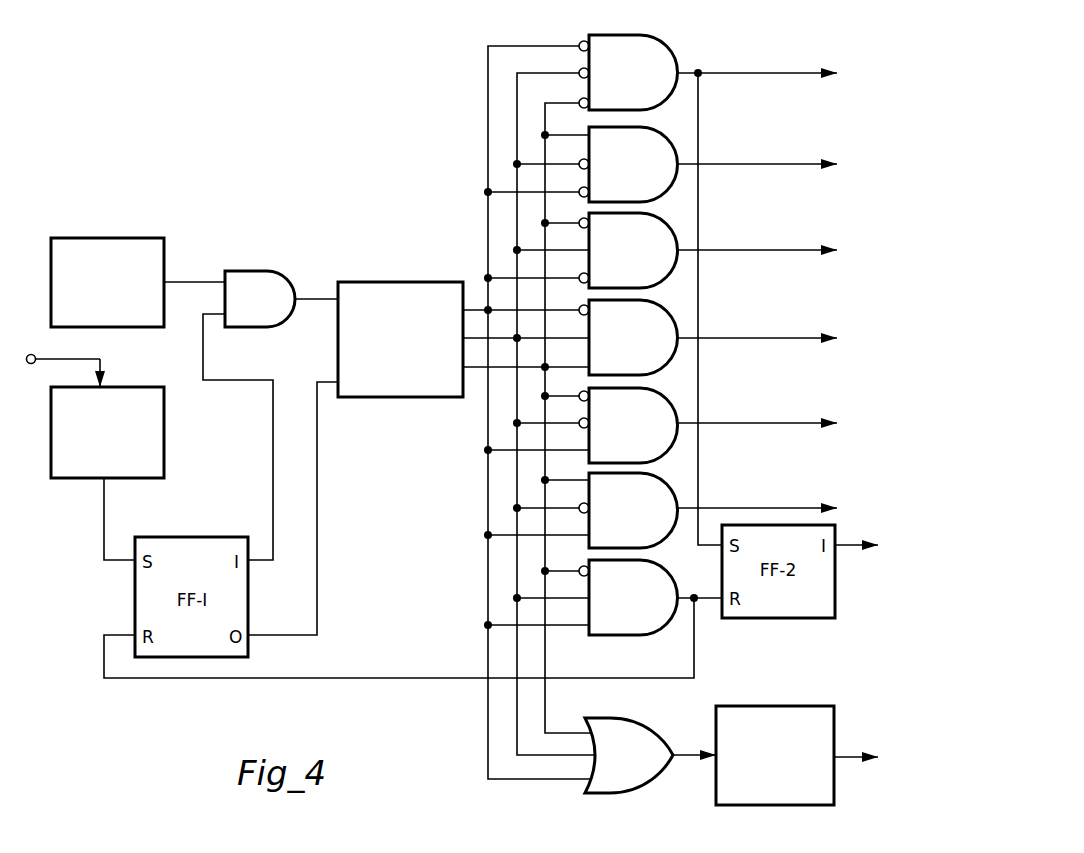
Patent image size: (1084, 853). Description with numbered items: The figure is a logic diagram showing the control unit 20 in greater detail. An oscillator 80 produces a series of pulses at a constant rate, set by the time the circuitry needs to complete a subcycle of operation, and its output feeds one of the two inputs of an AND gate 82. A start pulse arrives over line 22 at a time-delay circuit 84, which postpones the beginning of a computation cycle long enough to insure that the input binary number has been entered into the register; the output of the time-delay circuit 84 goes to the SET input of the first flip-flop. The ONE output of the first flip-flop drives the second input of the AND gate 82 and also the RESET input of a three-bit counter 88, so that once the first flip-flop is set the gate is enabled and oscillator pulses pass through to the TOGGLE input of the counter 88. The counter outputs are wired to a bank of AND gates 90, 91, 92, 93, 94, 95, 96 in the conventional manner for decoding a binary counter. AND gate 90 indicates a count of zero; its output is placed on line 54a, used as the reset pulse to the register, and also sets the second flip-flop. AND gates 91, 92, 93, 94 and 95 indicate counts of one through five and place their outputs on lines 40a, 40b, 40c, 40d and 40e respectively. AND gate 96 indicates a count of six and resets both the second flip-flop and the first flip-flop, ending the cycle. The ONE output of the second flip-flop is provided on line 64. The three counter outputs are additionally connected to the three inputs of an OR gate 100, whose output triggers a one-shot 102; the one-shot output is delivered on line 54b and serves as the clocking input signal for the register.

The control unit 20 is at (412, 534).
The line 22 is at (101, 362).
The oscillator 80 is at (126, 238).
The AND gate 82 is at (264, 310).
The time-delay circuit 84 is at (165, 432).
The three-bit counter 88 is at (425, 282).
The AND gate 90 is at (633, 86).
The AND gate 91 is at (633, 178).
The AND gate 92 is at (633, 264).
The AND gate 93 is at (633, 352).
The AND gate 94 is at (633, 438).
The AND gate 95 is at (633, 523).
The AND gate 96 is at (633, 612).
The OR gate 100 is at (648, 769).
The one-shot 102 is at (775, 755).
The line 54a is at (778, 70).
The line 54b is at (846, 760).
The line 40a is at (780, 164).
The line 40b is at (787, 249).
The line 40c is at (788, 338).
The line 40d is at (789, 423).
The line 40e is at (786, 508).
The line 64 is at (850, 547).